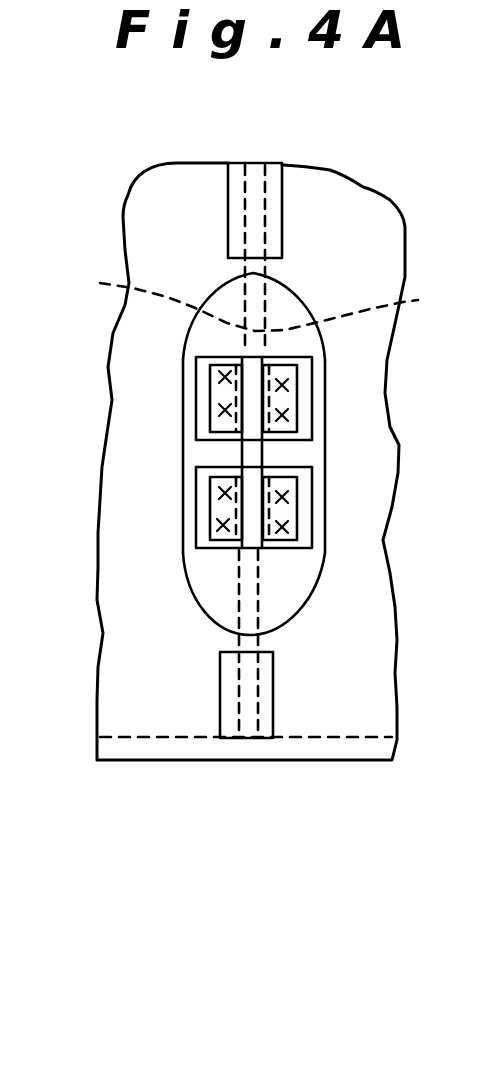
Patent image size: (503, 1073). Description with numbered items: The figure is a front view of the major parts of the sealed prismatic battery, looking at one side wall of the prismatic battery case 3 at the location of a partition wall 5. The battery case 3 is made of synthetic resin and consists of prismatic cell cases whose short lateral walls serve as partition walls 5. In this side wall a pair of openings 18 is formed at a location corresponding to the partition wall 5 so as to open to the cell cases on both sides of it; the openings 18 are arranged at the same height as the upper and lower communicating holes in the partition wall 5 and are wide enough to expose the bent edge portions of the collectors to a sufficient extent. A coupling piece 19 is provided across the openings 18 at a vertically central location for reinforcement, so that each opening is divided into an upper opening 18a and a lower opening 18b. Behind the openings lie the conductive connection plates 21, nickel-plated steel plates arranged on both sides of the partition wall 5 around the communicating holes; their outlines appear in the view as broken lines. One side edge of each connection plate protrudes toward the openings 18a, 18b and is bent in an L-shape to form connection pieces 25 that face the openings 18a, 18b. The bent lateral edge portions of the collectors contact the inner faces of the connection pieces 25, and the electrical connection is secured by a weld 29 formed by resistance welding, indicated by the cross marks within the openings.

The prismatic battery case 3 is at (170, 762).
The partition wall 5 is at (250, 513).
The opening 18 is at (210, 410).
The upper opening 18a is at (196, 432).
The lower opening 18b is at (225, 522).
The coupling piece 19 is at (196, 457).
The conductive connection plate 21 is at (267, 295).
The connection piece 25 is at (210, 373).
The weld 29 is at (210, 370).